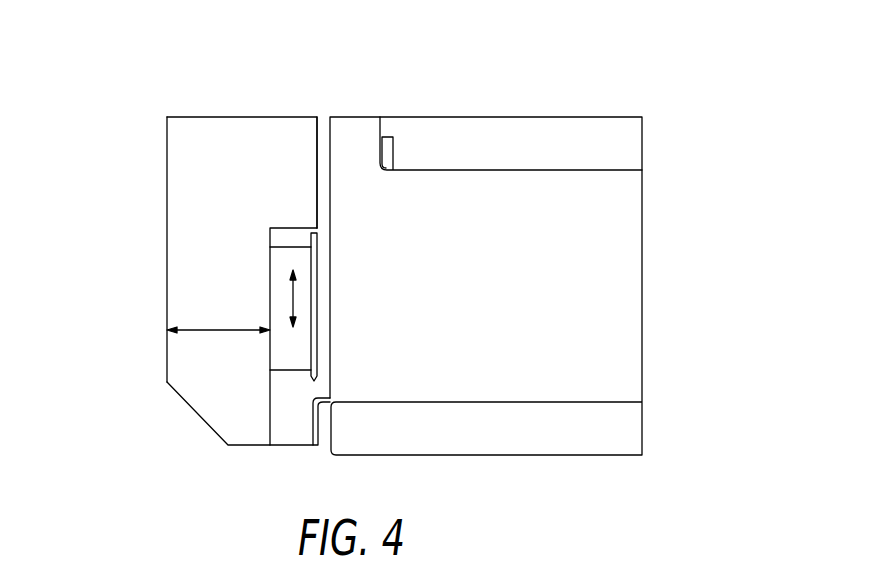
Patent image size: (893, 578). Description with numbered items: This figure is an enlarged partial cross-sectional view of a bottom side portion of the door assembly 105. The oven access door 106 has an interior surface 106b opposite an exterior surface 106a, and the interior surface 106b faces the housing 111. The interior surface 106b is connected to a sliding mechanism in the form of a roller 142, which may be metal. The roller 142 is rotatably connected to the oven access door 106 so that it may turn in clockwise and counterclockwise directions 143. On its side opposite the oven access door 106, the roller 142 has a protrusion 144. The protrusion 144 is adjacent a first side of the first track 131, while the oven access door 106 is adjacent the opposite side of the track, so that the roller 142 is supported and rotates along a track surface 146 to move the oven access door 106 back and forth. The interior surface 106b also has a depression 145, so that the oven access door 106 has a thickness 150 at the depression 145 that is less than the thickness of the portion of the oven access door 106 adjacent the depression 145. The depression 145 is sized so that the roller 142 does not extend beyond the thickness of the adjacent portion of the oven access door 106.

The door assembly 105 is at (237, 261).
The oven access door 106 is at (267, 261).
The exterior surface 106a is at (165, 303).
The interior surface 106b is at (317, 138).
The housing 111 is at (612, 381).
The first track 131 is at (298, 427).
The roller 142 is at (290, 268).
The clockwise and counterclockwise directions 143 is at (295, 297).
The protrusion 144 is at (311, 371).
The depression 145 is at (268, 233).
The track surface 146 is at (292, 372).
The thickness 150 is at (220, 333).